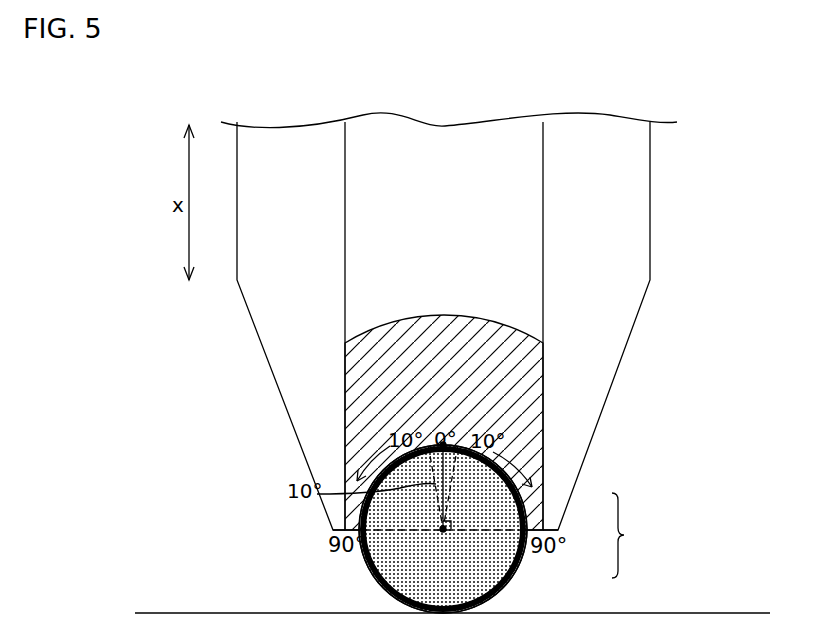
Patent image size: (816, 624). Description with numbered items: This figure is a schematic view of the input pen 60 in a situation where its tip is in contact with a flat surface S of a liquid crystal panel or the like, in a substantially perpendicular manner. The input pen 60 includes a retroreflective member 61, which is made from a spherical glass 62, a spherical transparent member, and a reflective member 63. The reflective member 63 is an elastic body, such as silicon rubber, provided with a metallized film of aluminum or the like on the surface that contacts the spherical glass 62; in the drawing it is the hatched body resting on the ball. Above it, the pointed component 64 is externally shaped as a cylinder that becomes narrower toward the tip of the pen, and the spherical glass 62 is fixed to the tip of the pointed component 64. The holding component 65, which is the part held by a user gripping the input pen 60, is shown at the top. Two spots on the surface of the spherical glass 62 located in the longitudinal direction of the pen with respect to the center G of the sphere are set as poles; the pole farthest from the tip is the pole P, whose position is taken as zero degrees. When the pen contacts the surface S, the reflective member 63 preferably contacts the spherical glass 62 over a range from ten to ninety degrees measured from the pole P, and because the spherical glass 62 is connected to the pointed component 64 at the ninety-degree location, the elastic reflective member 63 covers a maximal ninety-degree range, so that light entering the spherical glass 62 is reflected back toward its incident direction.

The input pen 60 is at (688, 223).
The retroreflective member 61 is at (635, 535).
The spherical glass 62 is at (516, 574).
The reflective member 63 is at (538, 516).
The pointed component 64 is at (650, 280).
The holding component 65 is at (437, 128).
The pole P is at (448, 445).
The center G is at (443, 529).
The surface S is at (724, 613).